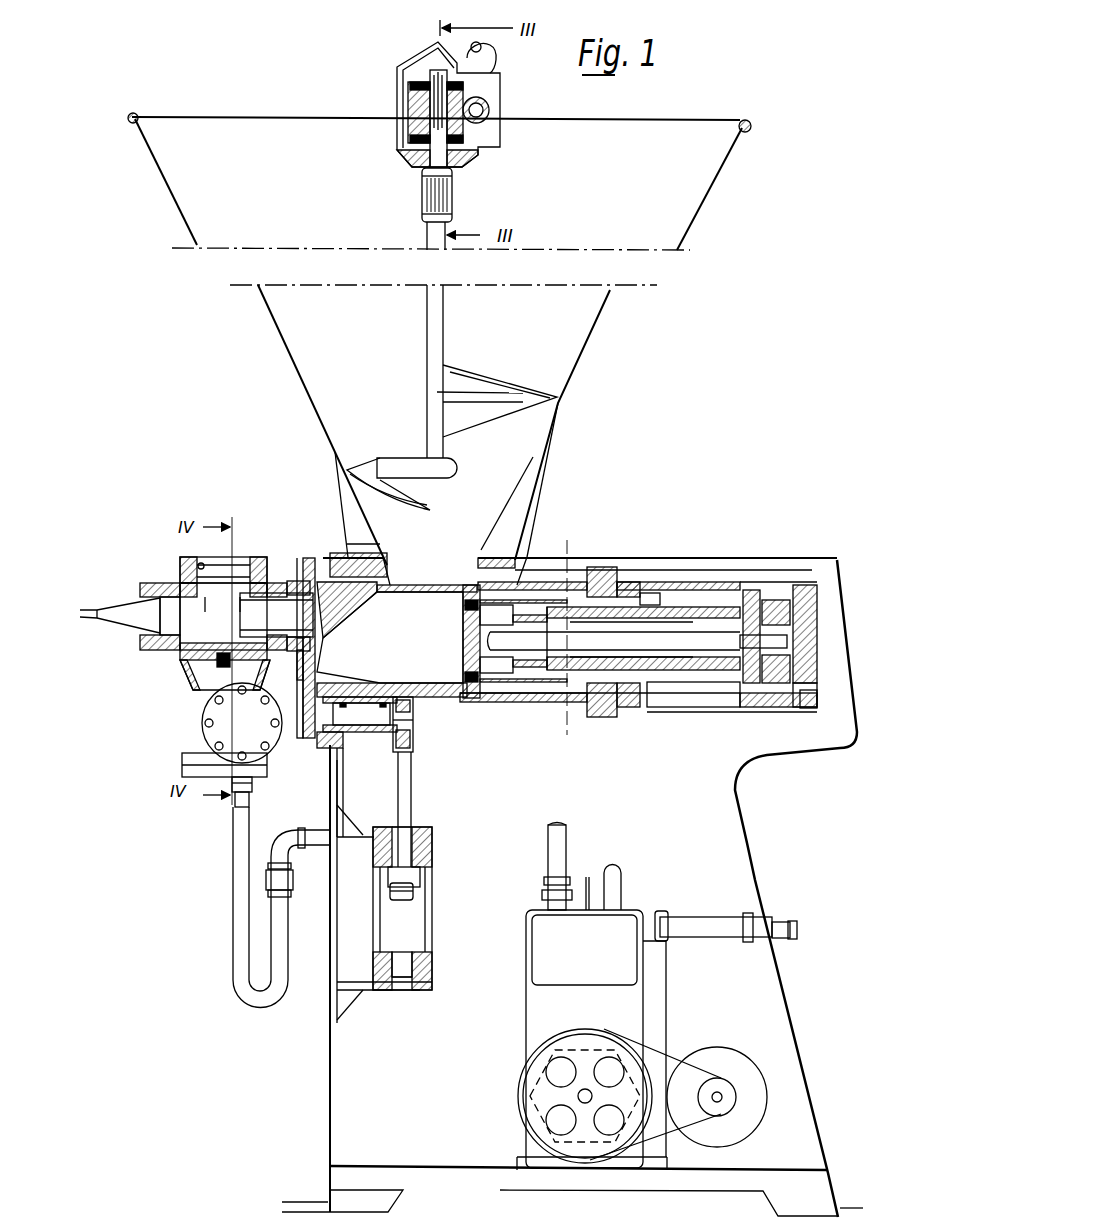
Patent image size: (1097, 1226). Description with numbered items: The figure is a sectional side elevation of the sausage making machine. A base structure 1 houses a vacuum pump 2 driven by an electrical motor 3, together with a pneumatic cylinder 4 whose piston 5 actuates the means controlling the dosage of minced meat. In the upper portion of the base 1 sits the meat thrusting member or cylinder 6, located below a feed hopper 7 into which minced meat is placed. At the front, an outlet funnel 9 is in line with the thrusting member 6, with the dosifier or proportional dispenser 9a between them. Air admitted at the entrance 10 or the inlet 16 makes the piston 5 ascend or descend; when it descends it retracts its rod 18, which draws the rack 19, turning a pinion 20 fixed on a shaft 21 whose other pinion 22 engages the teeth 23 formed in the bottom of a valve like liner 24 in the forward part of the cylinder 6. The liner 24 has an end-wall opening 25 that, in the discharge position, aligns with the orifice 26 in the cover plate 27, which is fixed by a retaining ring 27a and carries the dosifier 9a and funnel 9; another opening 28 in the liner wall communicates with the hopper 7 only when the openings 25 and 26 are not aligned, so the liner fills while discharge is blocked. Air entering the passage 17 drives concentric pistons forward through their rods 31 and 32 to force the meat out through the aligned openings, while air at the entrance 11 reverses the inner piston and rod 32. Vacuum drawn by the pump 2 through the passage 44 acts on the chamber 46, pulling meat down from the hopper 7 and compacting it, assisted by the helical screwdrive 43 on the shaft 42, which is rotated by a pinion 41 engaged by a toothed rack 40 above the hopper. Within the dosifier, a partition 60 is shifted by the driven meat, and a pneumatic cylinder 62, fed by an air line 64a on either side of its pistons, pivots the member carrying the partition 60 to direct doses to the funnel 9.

The base structure 1 is at (750, 843).
The vacuum pump 2 is at (624, 1019).
The electrical motor 3 is at (747, 1080).
The pneumatic cylinder 4 is at (432, 940).
The piston 5 is at (413, 892).
The meat thrusting member or cylinder 6 is at (527, 580).
The feed hopper 7 is at (583, 350).
The outlet funnel 9 is at (113, 627).
The dosifier or proportional dispenser 9a is at (172, 665).
The entrance 10 is at (425, 978).
The entrance 11 is at (623, 712).
The inlet 16 is at (433, 845).
The passage 17 is at (807, 712).
The rod 18 is at (413, 807).
The rack 19 is at (413, 748).
The pinion 20 is at (410, 722).
The shaft 21 is at (370, 713).
The pinion 22 is at (307, 753).
The teeth 23 is at (313, 676).
The valve like liner 24 is at (317, 557).
The opening 25 is at (317, 658).
The orifice 26 is at (310, 620).
The cover plate 27 is at (290, 558).
The retaining ring 27a is at (299, 557).
The opening 28 is at (417, 588).
The rod 31 is at (665, 645).
The rod 32 is at (700, 614).
The toothed rack 40 is at (482, 95).
The pinion 41 is at (400, 97).
The shaft 42 is at (433, 327).
The helical screwdrive 43 is at (537, 402).
The passage 44 is at (555, 690).
The chamber 46 is at (398, 641).
The partition 60 is at (237, 600).
The pneumatic cylinder 62 is at (203, 710).
The air line 64a is at (231, 930).